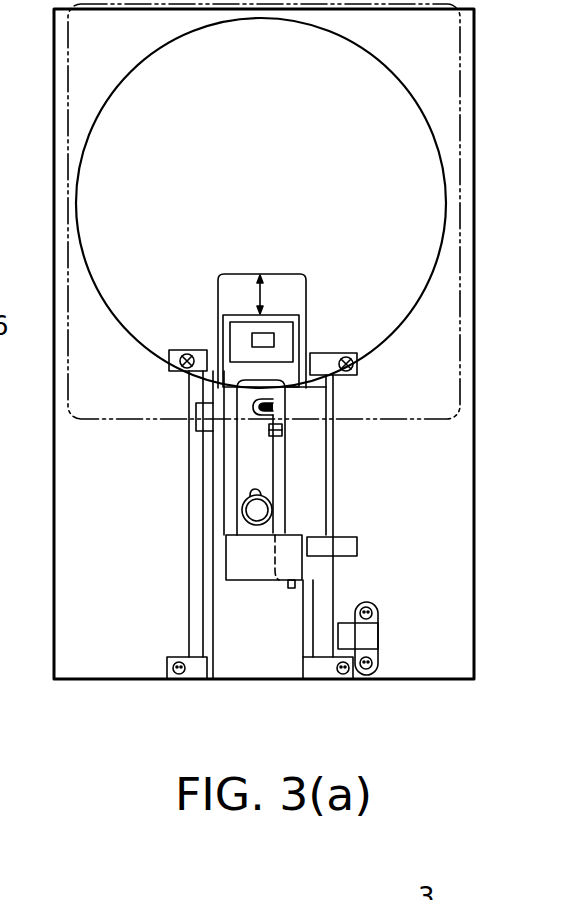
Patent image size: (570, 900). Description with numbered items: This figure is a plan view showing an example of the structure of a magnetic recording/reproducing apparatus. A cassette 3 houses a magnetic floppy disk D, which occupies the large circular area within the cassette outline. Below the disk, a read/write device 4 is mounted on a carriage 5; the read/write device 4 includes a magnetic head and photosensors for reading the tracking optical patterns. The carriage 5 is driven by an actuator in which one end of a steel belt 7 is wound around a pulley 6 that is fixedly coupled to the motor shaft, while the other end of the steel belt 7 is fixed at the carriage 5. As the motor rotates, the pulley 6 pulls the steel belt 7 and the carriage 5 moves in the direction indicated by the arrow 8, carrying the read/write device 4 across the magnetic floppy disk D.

The magnetic floppy disk D is at (93, 128).
The cassette 3 is at (358, 419).
The read/write device 4 is at (272, 340).
The carriage 5 is at (225, 478).
The pulley 6 is at (253, 513).
The steel belt 7 is at (272, 452).
The arrow 8 is at (263, 292).